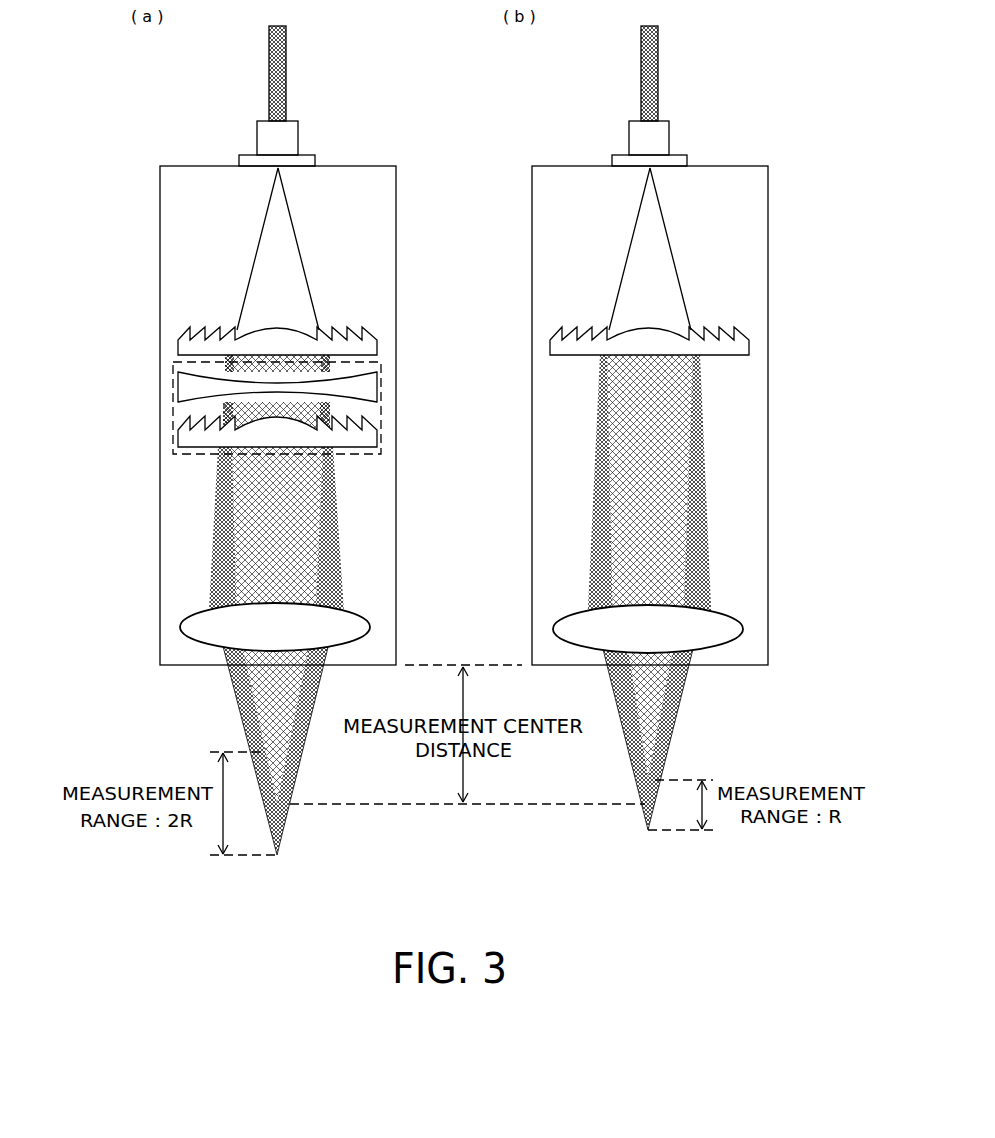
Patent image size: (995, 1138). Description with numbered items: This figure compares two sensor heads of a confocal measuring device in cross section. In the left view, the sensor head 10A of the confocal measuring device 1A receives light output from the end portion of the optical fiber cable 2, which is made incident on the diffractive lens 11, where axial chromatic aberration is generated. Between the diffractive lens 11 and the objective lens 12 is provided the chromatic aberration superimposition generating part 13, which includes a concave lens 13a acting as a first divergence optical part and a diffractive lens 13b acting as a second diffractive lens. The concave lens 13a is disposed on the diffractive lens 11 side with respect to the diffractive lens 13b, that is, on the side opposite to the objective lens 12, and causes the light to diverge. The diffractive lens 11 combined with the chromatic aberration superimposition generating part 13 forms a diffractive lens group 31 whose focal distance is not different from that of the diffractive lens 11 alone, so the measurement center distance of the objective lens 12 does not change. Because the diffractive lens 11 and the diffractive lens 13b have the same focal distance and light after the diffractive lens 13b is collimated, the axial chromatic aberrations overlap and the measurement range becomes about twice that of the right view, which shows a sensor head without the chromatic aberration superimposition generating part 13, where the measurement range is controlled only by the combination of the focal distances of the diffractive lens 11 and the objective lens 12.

The confocal measuring device 1A is at (360, 62).
The optical fiber cable 2 is at (286, 50).
The sensor head 10A is at (396, 198).
The diffractive lens 11 is at (365, 347).
The objective lens 12 is at (365, 630).
The chromatic aberration superimposition generating part 13 is at (275, 408).
The concave lens 13a is at (190, 388).
The diffractive lens 13b is at (190, 437).
The diffractive lens group 31 is at (295, 392).